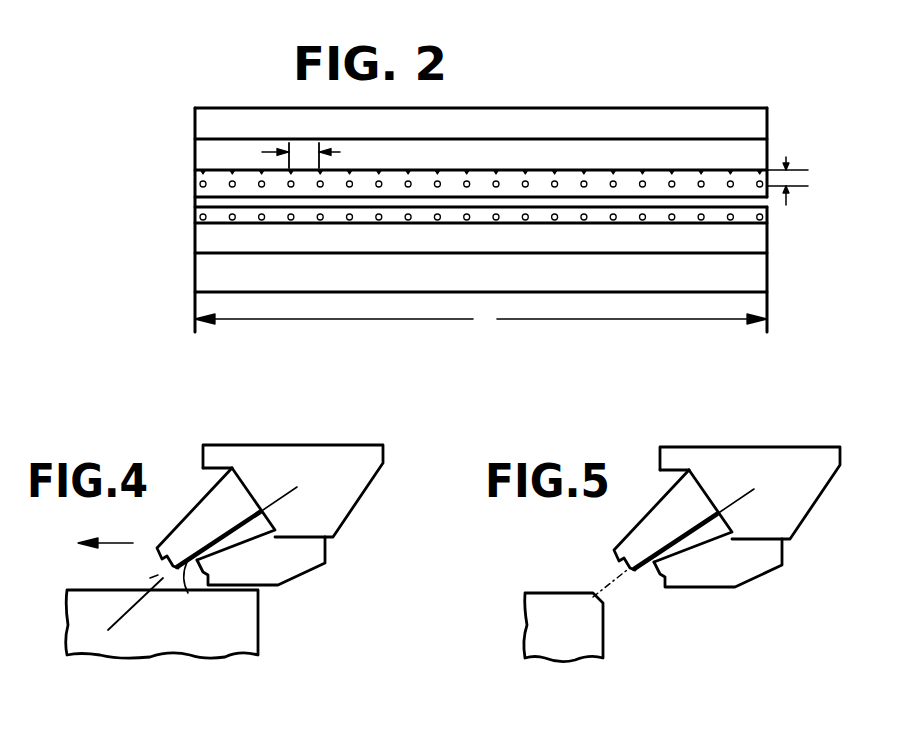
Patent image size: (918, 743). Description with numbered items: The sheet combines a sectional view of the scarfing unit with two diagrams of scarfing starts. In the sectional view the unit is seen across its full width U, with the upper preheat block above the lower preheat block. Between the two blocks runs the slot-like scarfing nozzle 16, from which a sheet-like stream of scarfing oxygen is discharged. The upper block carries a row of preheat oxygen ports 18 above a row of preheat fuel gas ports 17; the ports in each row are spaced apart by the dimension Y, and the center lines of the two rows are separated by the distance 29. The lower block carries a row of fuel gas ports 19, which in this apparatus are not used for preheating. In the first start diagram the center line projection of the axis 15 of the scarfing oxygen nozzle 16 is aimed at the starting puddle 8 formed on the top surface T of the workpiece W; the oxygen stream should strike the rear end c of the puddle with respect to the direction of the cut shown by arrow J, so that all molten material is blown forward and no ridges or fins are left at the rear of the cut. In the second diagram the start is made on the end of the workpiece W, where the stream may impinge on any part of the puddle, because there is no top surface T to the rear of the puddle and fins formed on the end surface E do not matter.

In FIG. 4, the shear plane 8 is at (132, 613).
In FIG. 4, the axis of scarfing oxygen nozzle 15 is at (153, 582).
In FIG. 5, the axis of scarfing oxygen nozzle 15 is at (598, 590).
In FIG. 2, the scarfing nozzle 16 is at (200, 215).
In FIG. 4, the scarfing nozzle 16 is at (187, 562).
In FIG. 5, the scarfing nozzle 16 is at (650, 570).
In FIG. 2, the preheat fuel gas ports 17 is at (200, 182).
In FIG. 2, the preheat oxygen ports 18 is at (200, 168).
In FIG. 2, the fuel gas ports 19 is at (464, 266).
In FIG. 2, the distance between port center lines 29 is at (787, 166).
In FIG. 2, the width of the scarfing unit U is at (481, 321).
In FIG. 2, the port spacing Y is at (311, 155).
In FIG. 4, the arrow indicating direction of scarfing cut J is at (105, 535).
In FIG. 4, the top surface of workpiece T is at (85, 588).
In FIG. 5, the top surface of workpiece T is at (528, 590).
In FIG. 4, the workpiece W is at (262, 622).
In FIG. 5, the workpiece W is at (525, 635).
In FIG. 4, the rear end of starting puddle c is at (148, 595).
In FIG. 5, the end surface of workpiece E is at (603, 637).